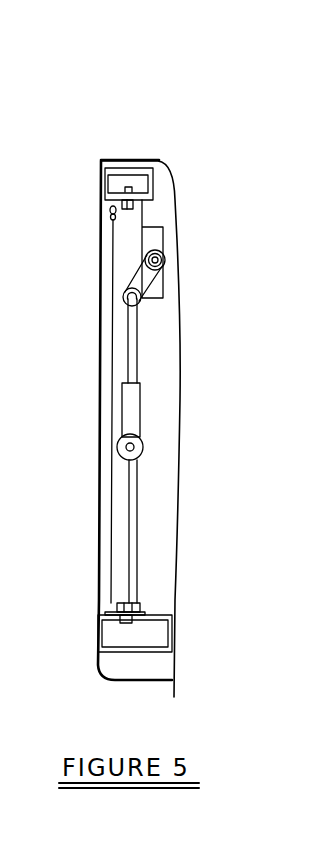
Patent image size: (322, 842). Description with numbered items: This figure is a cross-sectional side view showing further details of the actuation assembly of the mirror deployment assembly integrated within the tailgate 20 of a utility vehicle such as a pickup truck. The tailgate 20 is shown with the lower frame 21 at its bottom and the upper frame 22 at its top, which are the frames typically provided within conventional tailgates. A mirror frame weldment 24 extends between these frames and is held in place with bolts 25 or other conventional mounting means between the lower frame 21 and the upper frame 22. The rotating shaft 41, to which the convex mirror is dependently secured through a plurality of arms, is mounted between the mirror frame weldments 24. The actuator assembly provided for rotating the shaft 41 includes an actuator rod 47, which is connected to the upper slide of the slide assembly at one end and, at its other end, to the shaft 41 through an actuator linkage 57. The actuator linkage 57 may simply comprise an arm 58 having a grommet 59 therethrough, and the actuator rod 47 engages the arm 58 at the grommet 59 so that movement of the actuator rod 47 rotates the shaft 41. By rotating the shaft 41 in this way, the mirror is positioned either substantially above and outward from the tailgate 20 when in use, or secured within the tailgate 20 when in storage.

The tailgate 20 is at (139, 157).
The lower frame 21 is at (173, 645).
The upper frame 22 is at (106, 180).
The mirror frame weldment 24 is at (123, 237).
The bolt 25 is at (125, 605).
The rotating shaft 41 is at (163, 257).
The actuator rod 47 is at (127, 360).
The actuator linkage 57 is at (131, 273).
The arm 58 is at (150, 278).
The grommet 59 is at (143, 307).